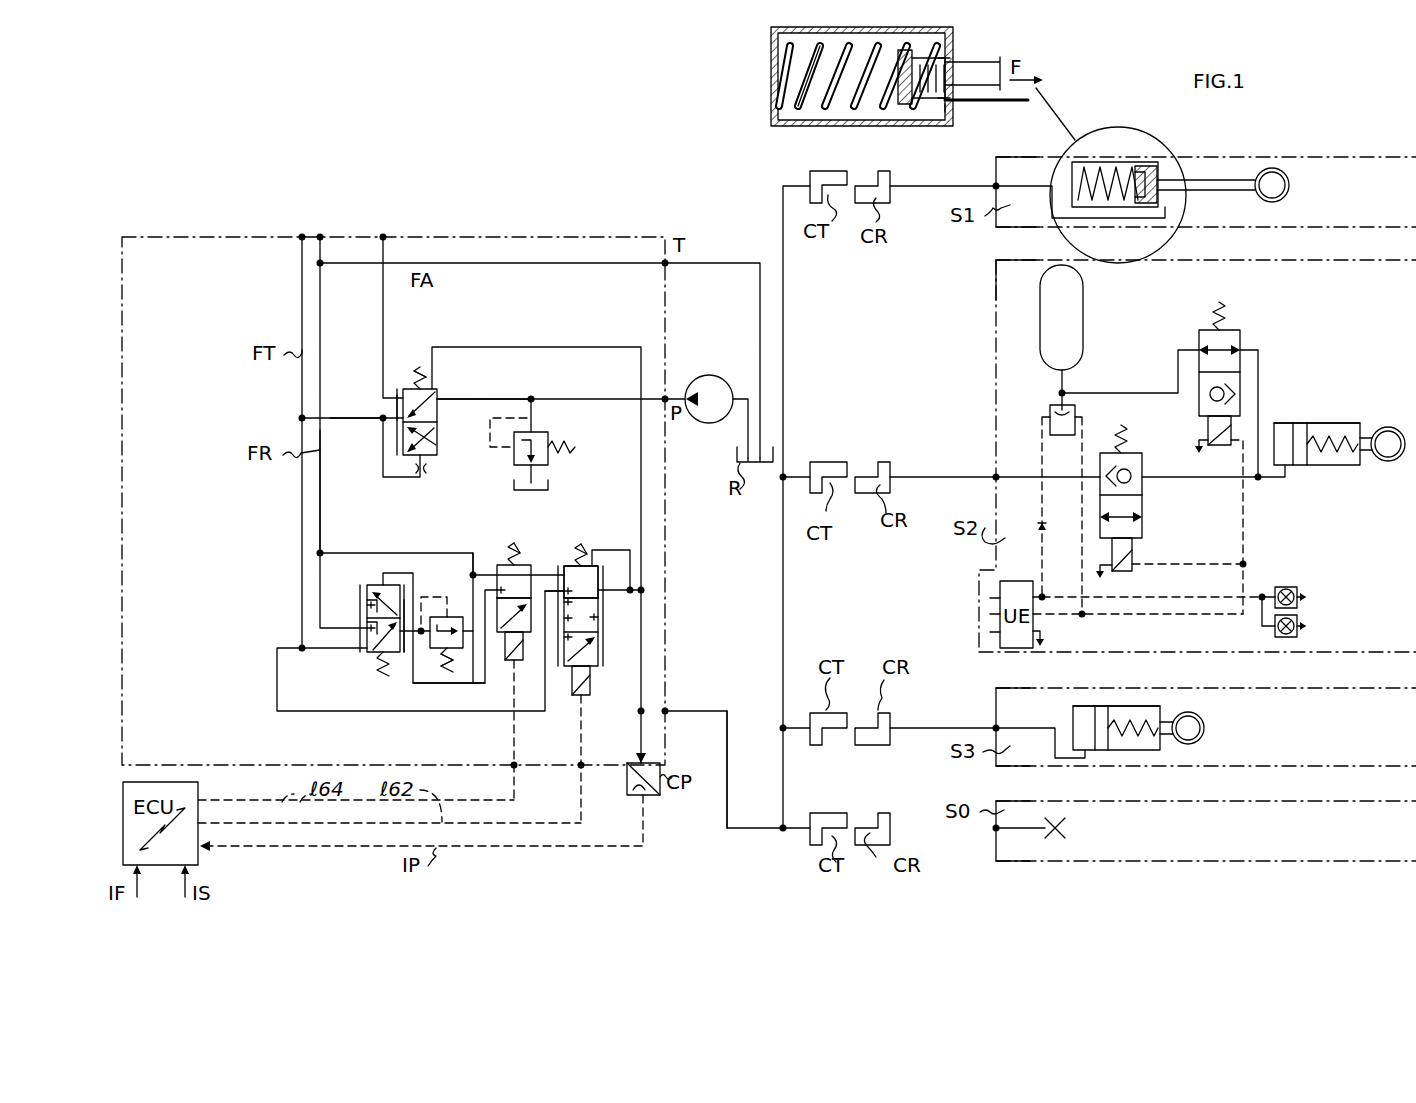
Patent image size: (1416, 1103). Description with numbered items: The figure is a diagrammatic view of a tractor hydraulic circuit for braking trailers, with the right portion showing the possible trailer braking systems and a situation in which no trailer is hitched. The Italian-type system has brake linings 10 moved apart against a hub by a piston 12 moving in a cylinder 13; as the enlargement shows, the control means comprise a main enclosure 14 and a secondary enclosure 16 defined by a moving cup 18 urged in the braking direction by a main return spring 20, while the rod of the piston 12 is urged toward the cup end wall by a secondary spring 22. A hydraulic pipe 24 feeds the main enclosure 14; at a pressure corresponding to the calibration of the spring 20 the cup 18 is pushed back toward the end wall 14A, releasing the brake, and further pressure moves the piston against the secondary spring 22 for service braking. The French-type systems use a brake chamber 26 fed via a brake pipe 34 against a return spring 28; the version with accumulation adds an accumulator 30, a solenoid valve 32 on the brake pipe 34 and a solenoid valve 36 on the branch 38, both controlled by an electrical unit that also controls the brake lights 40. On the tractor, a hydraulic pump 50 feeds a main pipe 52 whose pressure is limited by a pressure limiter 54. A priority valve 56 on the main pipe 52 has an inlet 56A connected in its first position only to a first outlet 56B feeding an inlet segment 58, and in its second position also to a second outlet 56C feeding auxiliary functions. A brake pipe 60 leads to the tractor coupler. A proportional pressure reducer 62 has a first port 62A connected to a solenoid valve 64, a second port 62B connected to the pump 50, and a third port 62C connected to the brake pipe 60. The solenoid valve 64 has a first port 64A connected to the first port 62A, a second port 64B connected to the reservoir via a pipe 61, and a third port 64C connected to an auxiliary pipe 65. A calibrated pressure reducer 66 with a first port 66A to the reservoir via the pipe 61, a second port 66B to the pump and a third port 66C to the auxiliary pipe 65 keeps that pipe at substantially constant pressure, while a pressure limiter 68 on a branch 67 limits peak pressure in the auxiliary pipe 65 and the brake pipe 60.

The brake linings 10 is at (1292, 188).
The piston 12 is at (1245, 188).
The cylinder 13 is at (1324, 424).
The main enclosure 14 is at (808, 115).
The end wall of the main enclosure 14A is at (800, 66).
The secondary enclosure 16 is at (940, 105).
The moving cup 18 is at (930, 98).
The main return spring 20 is at (800, 92).
The secondary spring 22 is at (945, 72).
The hydraulic pipe 24 is at (920, 186).
The brake chamber 26 is at (1285, 440).
The return spring 28 is at (1326, 470).
The accumulator 30 is at (1068, 312).
The solenoid valve 32 is at (1142, 504).
The brake pipe 34 is at (918, 470).
The solenoid valve 36 is at (1240, 340).
The branch 38 is at (1098, 393).
The brake lights 40 is at (1297, 630).
The hydraulic pump 50 is at (705, 378).
The main pipe 52 is at (496, 402).
The pressure limiter 54 is at (550, 422).
The priority valve 56 is at (459, 468).
The inlet 56A is at (437, 402).
The first outlet 56B is at (403, 410).
The second outlet 56C is at (414, 398).
The inlet segment 58 is at (355, 418).
The brake pipe 60 is at (727, 770).
The pipe 61 is at (320, 480).
The proportional pressure reducer 62 is at (600, 676).
The first port 62A is at (568, 583).
The second port 62B is at (556, 592).
The third port 62C is at (565, 576).
The solenoid valve 64 is at (500, 676).
The first port 64A is at (541, 583).
The second port 64B is at (500, 586).
The third port 64C is at (473, 570).
The auxiliary pipe 65 is at (465, 684).
The calibrated pressure reducer 66 is at (360, 650).
The first port 66A is at (375, 605).
The second port 66B is at (375, 648).
The third port 66C is at (404, 635).
The branch 67 is at (466, 612).
The pressure limiter 68 is at (444, 672).